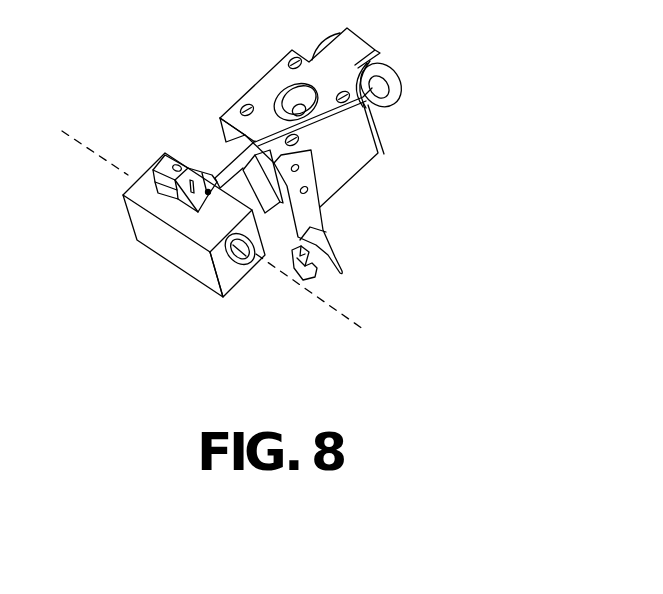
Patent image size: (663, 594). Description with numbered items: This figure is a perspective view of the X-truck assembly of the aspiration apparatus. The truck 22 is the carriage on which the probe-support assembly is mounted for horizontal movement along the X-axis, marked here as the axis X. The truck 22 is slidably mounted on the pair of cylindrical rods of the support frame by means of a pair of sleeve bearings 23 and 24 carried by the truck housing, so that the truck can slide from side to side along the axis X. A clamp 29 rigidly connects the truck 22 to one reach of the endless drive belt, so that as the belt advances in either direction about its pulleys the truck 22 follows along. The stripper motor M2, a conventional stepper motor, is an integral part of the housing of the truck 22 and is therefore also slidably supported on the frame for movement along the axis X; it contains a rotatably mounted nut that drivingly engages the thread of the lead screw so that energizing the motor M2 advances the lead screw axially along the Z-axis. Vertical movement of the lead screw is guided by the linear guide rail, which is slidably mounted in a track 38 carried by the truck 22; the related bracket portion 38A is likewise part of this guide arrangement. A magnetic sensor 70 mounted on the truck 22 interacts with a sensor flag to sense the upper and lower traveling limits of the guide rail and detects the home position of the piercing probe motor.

The truck 22 is at (173, 271).
The sleeve bearing 23 is at (240, 260).
The sleeve bearing 24 is at (392, 98).
The clamp 29 is at (168, 166).
The track 38 is at (233, 177).
The bracket 38A is at (263, 212).
The magnetic sensor 70 is at (339, 259).
The stripper motor M2 is at (343, 166).
The X-axis X is at (340, 310).